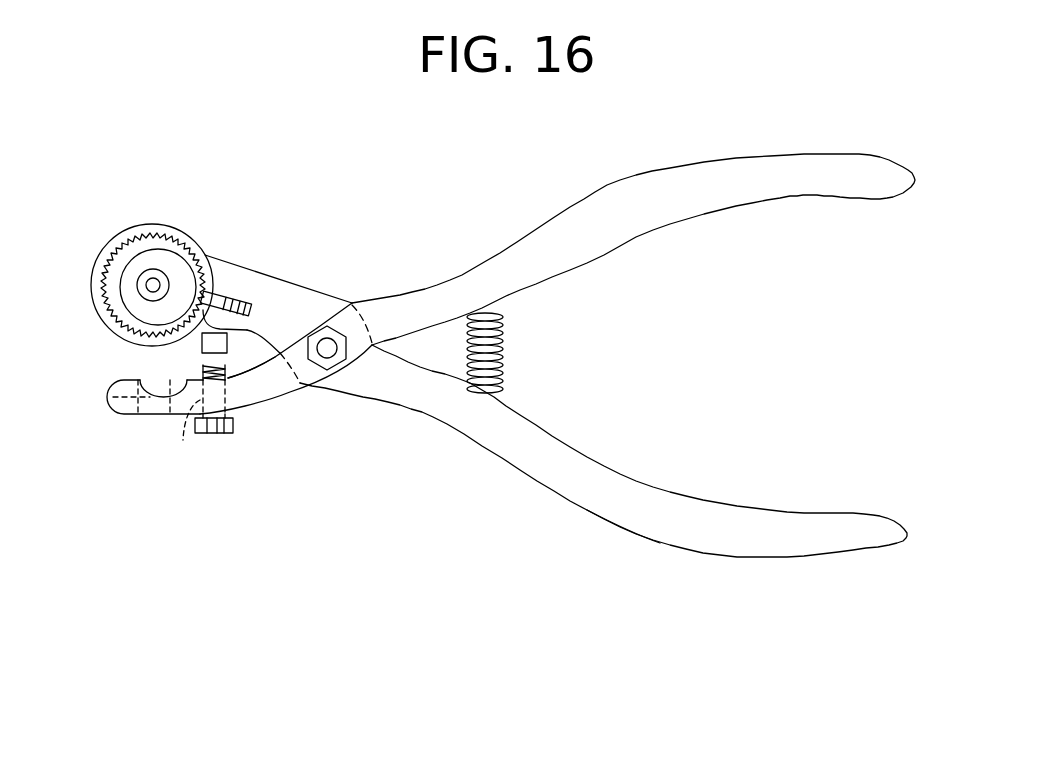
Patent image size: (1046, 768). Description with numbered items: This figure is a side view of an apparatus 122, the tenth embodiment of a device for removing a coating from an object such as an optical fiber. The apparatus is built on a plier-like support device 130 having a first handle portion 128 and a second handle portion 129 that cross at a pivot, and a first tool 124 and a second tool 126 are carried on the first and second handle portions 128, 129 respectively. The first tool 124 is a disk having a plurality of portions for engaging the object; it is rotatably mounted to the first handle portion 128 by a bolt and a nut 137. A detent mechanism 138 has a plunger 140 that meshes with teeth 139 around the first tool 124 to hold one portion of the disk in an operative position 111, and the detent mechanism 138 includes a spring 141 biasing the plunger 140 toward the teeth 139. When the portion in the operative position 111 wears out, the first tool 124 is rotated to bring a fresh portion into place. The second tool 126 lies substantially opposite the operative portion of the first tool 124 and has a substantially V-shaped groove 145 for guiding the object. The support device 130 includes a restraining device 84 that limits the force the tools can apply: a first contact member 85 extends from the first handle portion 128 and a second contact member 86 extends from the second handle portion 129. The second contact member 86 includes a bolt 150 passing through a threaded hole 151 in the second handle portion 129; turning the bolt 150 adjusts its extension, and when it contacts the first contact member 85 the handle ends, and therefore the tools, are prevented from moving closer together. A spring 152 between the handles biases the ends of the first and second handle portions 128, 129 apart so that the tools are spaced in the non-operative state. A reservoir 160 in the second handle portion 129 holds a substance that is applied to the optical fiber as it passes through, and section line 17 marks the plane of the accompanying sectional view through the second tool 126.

The section line 17- 17 is at (153, 178).
The restraining device 84 is at (240, 404).
The first contact member 85 is at (227, 348).
The second contact member 86 is at (210, 366).
The operative position 111 is at (114, 360).
The apparatus 122 is at (527, 192).
The first tool 124 is at (163, 225).
The second tool 126 is at (130, 425).
The first handle portion 128 is at (672, 503).
The second handle portion 129 is at (713, 210).
The support device 130 is at (629, 552).
The nut 137 is at (137, 276).
The detent mechanism 138 is at (252, 287).
The teeth 139 is at (210, 262).
The plunger 140 is at (229, 316).
The spring 141 is at (241, 306).
The V-shaped groove 145 is at (157, 388).
The bolt 150 is at (217, 434).
The threaded hole 151 is at (207, 444).
The spring 152 is at (503, 360).
The reservoir 160 is at (113, 397).